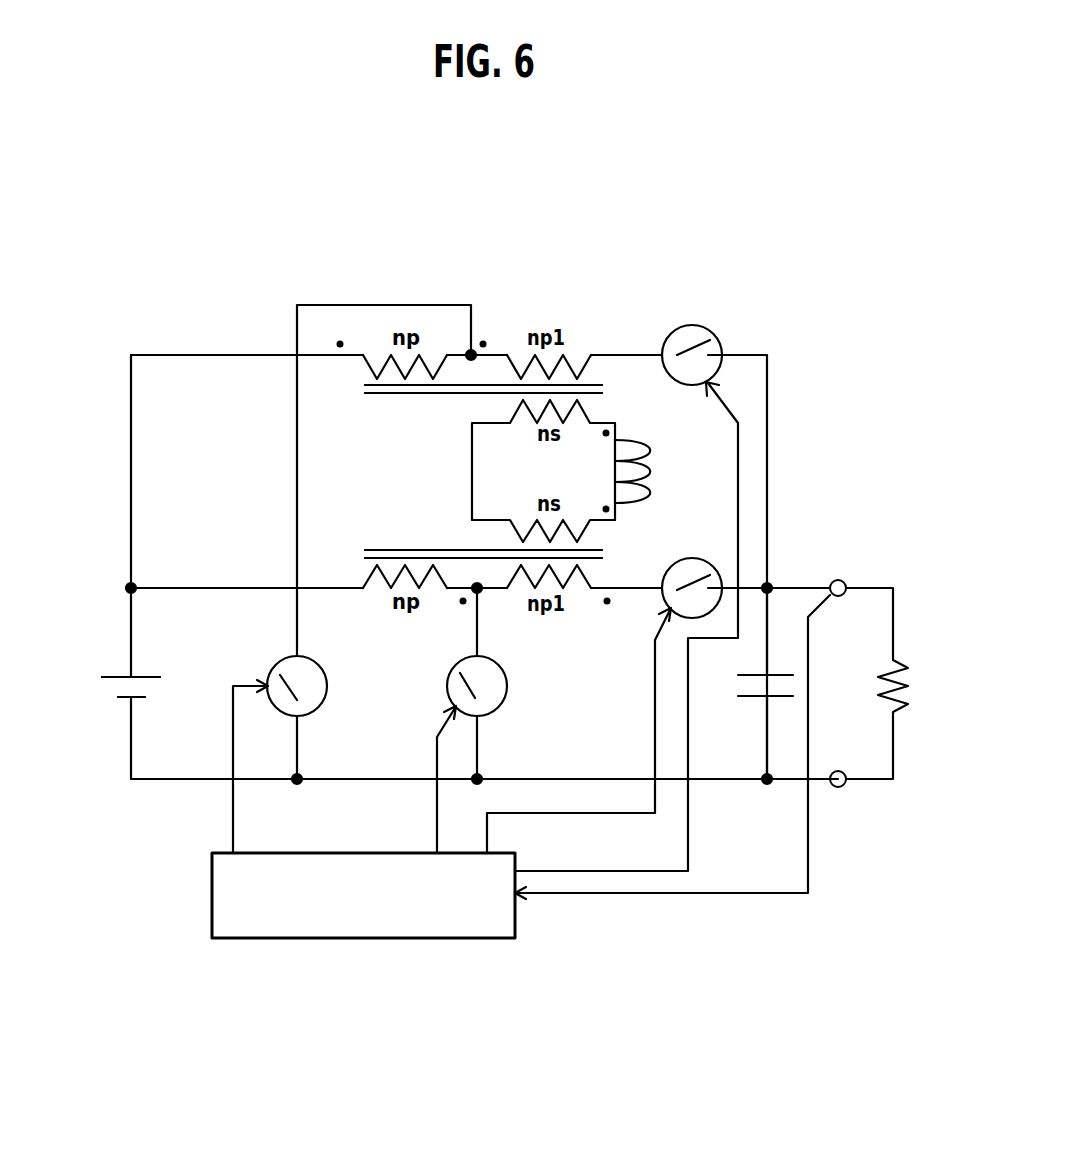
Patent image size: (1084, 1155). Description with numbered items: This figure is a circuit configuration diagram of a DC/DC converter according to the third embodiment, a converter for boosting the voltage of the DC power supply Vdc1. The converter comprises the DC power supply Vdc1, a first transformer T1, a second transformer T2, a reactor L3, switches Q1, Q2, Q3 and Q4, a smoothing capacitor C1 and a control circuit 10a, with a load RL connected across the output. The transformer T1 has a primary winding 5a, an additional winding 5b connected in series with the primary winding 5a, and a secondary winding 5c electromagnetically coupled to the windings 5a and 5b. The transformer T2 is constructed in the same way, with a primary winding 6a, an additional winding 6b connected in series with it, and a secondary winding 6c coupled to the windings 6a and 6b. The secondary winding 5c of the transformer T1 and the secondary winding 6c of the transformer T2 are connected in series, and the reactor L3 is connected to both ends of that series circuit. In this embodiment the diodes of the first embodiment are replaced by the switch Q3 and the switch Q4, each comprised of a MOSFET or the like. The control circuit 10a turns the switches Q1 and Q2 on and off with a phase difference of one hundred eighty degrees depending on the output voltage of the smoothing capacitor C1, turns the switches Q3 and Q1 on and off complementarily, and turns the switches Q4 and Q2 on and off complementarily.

The primary winding 5a is at (405, 322).
The additional winding 5b is at (548, 322).
The secondary winding 5c is at (518, 420).
The primary winding 6a is at (378, 597).
The additional winding 6b is at (580, 590).
The secondary winding 6c is at (573, 512).
The control circuit 10a is at (518, 912).
The switch Q1 is at (311, 711).
The switch Q2 is at (490, 683).
The switch Q3 is at (692, 340).
The switch Q4 is at (692, 532).
The transformer T1 is at (467, 390).
The transformer T2 is at (467, 555).
The reactor L3 is at (615, 471).
The smoothing capacitor C1 is at (749, 683).
The load RL is at (899, 683).
The DC power supply Vdc1 is at (100, 690).